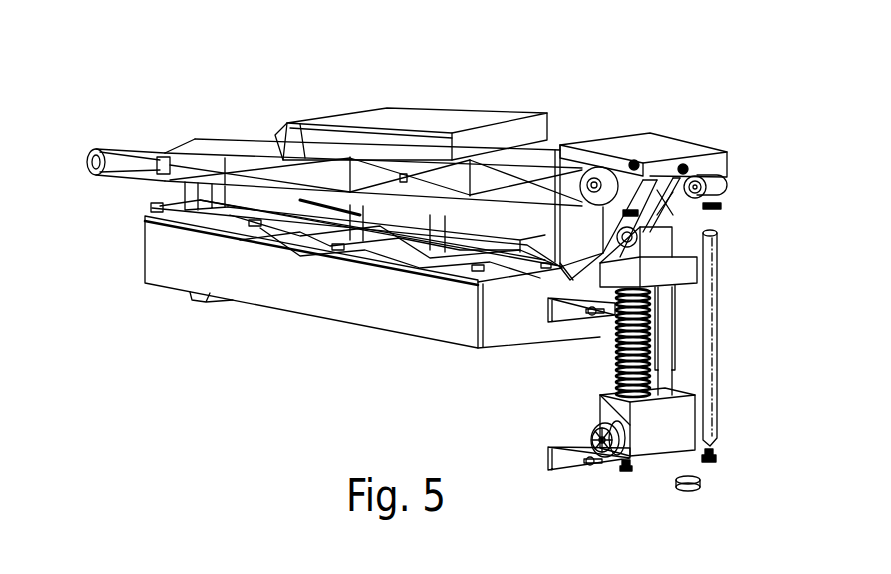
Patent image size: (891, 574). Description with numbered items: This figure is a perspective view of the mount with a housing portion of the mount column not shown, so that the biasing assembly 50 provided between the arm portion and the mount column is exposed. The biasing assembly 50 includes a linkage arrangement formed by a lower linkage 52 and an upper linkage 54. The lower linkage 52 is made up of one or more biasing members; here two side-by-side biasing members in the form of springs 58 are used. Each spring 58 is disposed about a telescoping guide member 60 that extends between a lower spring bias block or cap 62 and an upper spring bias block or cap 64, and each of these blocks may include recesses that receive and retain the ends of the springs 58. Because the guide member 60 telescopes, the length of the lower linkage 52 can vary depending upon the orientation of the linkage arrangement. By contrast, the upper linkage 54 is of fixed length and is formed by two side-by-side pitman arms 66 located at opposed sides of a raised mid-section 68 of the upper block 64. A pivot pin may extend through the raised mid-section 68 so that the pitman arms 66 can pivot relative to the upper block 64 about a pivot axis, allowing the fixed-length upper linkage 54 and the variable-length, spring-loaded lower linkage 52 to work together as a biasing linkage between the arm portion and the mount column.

The biasing assembly 50 is at (583, 377).
The lower linkage 52 is at (687, 325).
The upper linkage 54 is at (686, 221).
The spring 58 is at (612, 380).
The telescoping guide member 60 is at (680, 355).
The lower spring bias block 62 is at (687, 420).
The upper spring bias block 64 is at (690, 270).
The pitman arm 66 is at (636, 165).
The raised mid-section 68 is at (663, 245).